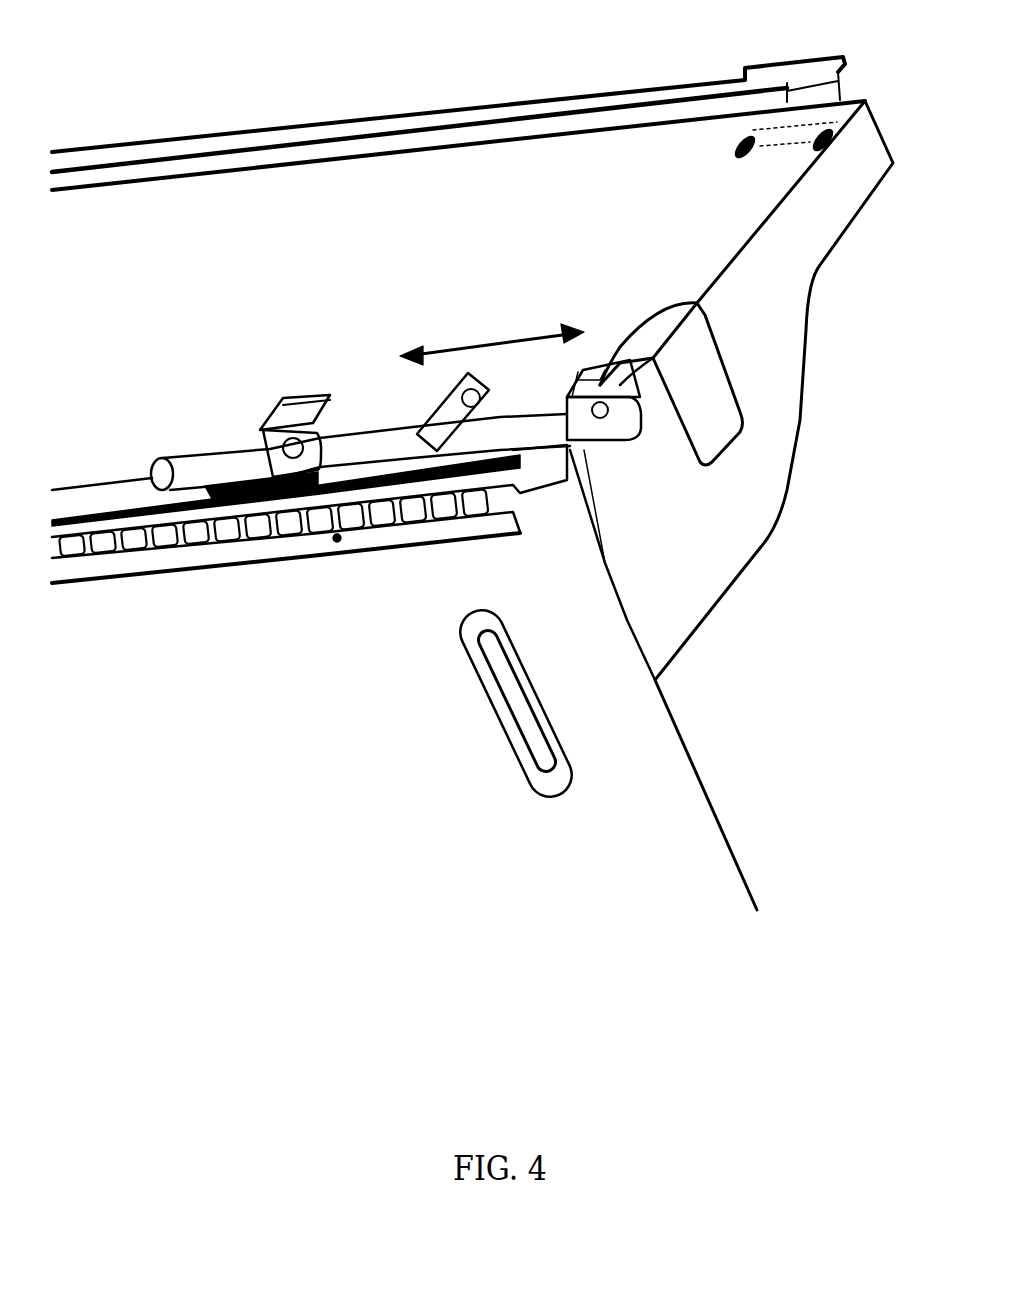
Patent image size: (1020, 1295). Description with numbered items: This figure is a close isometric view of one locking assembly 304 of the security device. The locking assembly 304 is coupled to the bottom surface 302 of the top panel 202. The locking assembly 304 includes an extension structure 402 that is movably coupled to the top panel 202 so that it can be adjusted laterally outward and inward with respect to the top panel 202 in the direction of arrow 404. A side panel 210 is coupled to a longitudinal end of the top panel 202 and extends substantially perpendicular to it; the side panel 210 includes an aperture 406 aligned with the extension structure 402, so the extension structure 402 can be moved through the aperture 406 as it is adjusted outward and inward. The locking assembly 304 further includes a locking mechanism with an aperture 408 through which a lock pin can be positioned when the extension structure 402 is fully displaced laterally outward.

The top panel 202 is at (203, 140).
The side panels 210 is at (737, 577).
The bottom surface 302 is at (490, 180).
The locking assembly 304 is at (240, 350).
The extension structure 402 is at (203, 452).
The arrow 404 is at (480, 343).
The aperture 406 is at (633, 440).
The aperture 408 is at (300, 442).